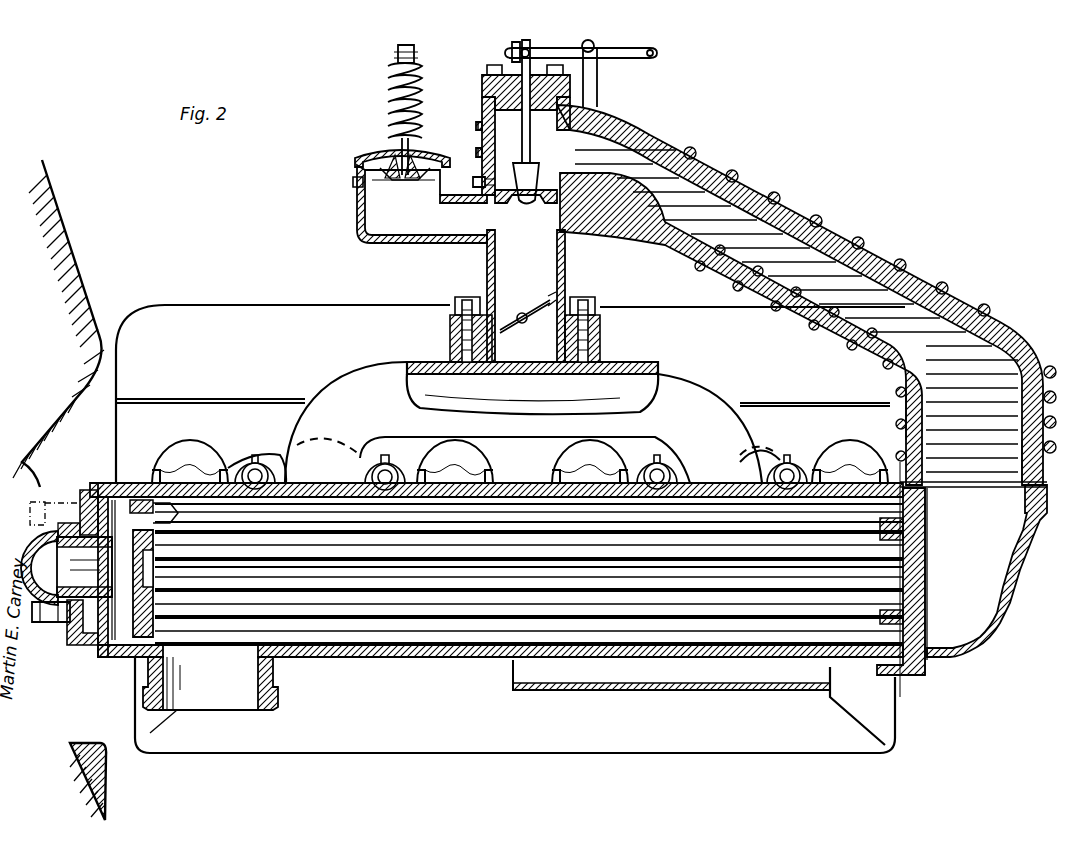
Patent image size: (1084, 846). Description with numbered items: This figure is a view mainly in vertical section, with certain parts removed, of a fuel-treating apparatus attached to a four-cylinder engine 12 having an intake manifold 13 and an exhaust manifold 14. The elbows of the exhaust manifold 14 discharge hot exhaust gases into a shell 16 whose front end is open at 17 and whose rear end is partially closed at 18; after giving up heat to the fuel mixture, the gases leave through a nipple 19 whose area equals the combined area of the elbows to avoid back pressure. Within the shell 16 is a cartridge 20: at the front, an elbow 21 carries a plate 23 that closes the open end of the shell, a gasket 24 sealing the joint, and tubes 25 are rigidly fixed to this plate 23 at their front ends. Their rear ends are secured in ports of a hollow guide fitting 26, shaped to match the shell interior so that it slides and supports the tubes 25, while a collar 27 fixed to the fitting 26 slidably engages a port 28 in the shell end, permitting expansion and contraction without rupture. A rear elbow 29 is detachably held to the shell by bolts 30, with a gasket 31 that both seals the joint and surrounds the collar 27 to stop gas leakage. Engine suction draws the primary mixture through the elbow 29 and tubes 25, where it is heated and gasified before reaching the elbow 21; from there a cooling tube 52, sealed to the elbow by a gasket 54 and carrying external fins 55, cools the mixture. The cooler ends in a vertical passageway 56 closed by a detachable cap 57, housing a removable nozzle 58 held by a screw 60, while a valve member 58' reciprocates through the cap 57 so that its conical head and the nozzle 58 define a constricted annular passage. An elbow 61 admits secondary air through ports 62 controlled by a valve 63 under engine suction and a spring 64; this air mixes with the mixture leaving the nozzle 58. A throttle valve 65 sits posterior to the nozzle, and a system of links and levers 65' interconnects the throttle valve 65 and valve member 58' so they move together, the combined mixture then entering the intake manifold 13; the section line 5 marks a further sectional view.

The section line 5- 5 is at (927, 702).
The engine 12 is at (215, 320).
The intake manifold 13 is at (627, 365).
The exhaust manifold 14 is at (190, 454).
The shell 16 is at (368, 660).
The open front end 17 is at (927, 503).
The partially closed rear end 18 is at (81, 515).
The nipple 19 is at (237, 668).
The cartridge 20 is at (918, 553).
The elbow 21 is at (1015, 571).
The plate 23 is at (925, 586).
The gasket 24 is at (940, 494).
The tubes 25 is at (905, 525).
The hollow guide fitting 26 is at (118, 491).
The collar 27 is at (100, 576).
The port 28 is at (85, 640).
The elbow 29 is at (32, 546).
The bolts 30 is at (28, 603).
The gasket 31 is at (65, 622).
The cooling tube 52 is at (905, 290).
The gasket 54 is at (1013, 480).
The fins 55 is at (900, 418).
The vertical passageway 56 is at (505, 107).
The detachable cap 57 is at (482, 80).
The removable nozzle 58 is at (536, 170).
The valve member 58' is at (484, 139).
The screw 60 is at (497, 180).
The elbow 61 is at (413, 212).
The ports 62 is at (420, 163).
The valve 63 is at (362, 210).
The spring 64 is at (415, 100).
The throttle valve 65 is at (553, 302).
The system of links and levers 65' is at (581, 73).